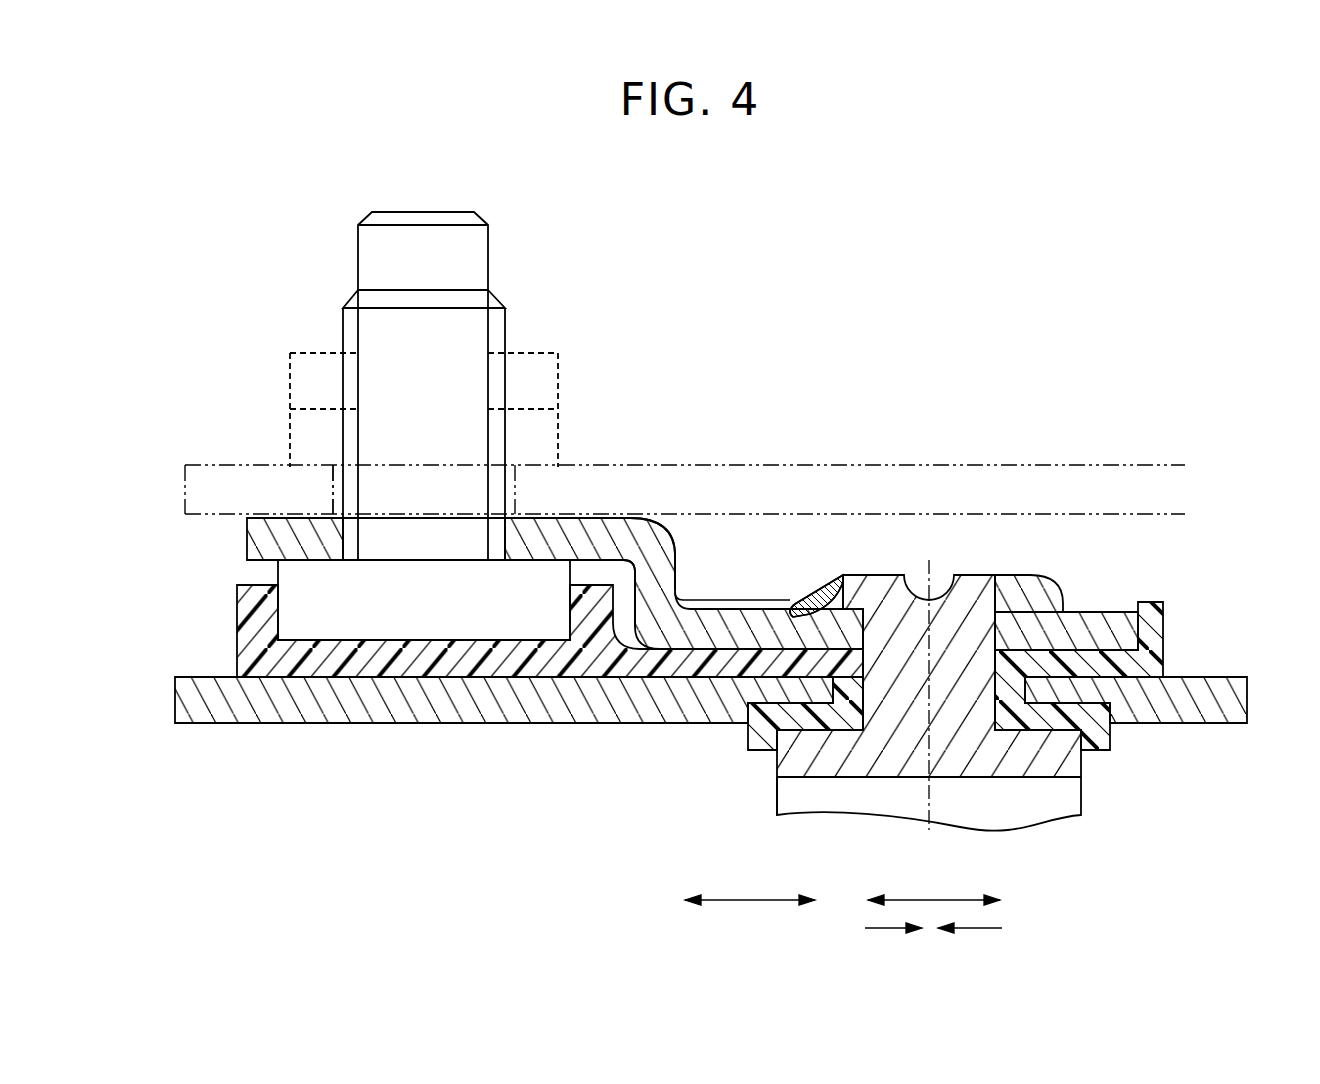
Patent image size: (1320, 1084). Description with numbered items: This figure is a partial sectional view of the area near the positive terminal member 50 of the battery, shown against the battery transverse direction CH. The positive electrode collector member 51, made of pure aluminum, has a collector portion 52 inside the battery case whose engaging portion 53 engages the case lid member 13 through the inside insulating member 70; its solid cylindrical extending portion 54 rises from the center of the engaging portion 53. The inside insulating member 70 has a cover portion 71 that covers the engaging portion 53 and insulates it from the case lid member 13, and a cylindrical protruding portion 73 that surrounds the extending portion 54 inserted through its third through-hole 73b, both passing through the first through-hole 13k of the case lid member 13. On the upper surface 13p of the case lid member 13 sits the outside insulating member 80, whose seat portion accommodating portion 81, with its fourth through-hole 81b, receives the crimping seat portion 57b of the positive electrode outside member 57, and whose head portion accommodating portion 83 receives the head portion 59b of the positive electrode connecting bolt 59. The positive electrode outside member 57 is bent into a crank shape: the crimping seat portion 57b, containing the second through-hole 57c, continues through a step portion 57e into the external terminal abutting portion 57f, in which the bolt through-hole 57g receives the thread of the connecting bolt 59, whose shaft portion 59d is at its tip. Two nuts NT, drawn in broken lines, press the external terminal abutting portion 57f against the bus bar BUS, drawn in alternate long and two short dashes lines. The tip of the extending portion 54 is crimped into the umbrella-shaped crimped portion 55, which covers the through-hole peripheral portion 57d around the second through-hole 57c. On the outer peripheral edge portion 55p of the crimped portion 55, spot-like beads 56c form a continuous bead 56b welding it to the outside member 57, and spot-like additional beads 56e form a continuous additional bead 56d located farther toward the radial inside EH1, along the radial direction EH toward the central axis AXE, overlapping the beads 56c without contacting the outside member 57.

The positive terminal member 50 is at (693, 517).
The positive electrode connecting bolt 59 is at (410, 472).
The shaft portion 59d is at (372, 267).
The head portion 59b is at (347, 617).
The nut NT is at (300, 380).
The bus bar BUS is at (1055, 465).
The positive electrode outside member 57 is at (600, 538).
The second through-hole 57c is at (407, 490).
The bolt through-hole 57g is at (347, 540).
The external terminal abutting portion 57f is at (617, 530).
The step portion 57e is at (667, 567).
The crimping seat portion 57b is at (737, 620).
The through-hole peripheral portion 57d is at (978, 628).
The positive electrode collector member 51 is at (981, 624).
The collector portion 52 is at (1028, 805).
The engaging portion 53 is at (813, 763).
The extending portion 54 is at (958, 690).
The crimped portion 55 is at (1072, 588).
The outer peripheral edge portion 55p is at (1047, 593).
The spot-like bead 56c is at (796, 606).
The continuous bead 56b is at (800, 610).
The spot-like additional bead 56e is at (825, 573).
The continuous additional bead 56d is at (826, 598).
The central axis AXE is at (930, 681).
The outside insulating member 80 is at (586, 604).
The head portion accommodating portion 83 is at (413, 663).
The seat portion accommodating portion 81 is at (657, 670).
The fourth through-hole 81b is at (863, 667).
The case lid member 13 is at (685, 698).
The upper surface 13p is at (205, 677).
The first through-hole 13k is at (1013, 705).
The inside insulating member 70 is at (767, 781).
The cover portion 71 is at (763, 730).
The cylindrical protruding portion 73 is at (775, 805).
The third through-hole 73b is at (863, 690).
The battery transverse direction CH is at (750, 915).
The radial direction EH is at (955, 903).
The radial inside EH1 is at (962, 929).